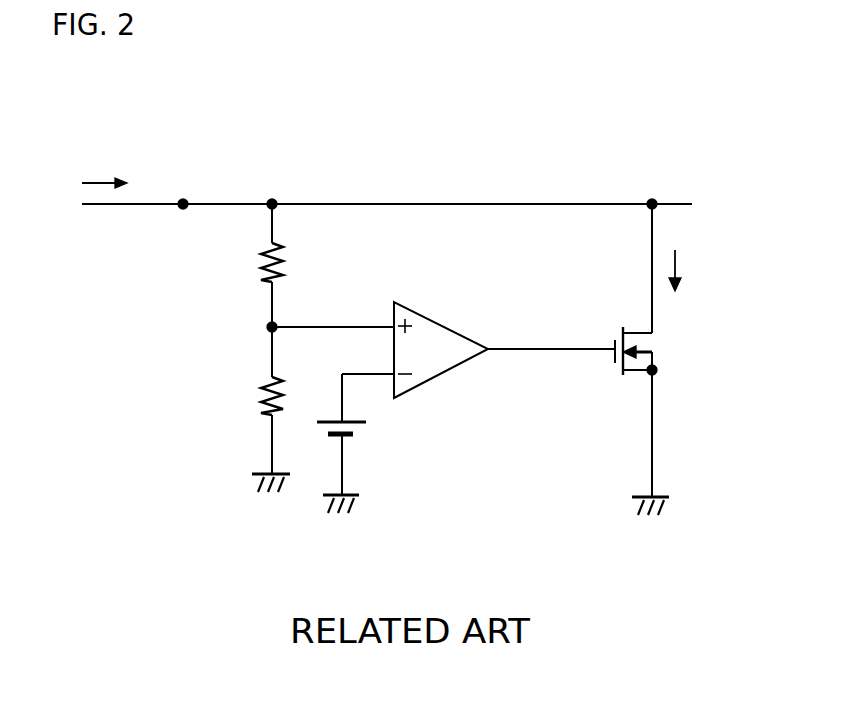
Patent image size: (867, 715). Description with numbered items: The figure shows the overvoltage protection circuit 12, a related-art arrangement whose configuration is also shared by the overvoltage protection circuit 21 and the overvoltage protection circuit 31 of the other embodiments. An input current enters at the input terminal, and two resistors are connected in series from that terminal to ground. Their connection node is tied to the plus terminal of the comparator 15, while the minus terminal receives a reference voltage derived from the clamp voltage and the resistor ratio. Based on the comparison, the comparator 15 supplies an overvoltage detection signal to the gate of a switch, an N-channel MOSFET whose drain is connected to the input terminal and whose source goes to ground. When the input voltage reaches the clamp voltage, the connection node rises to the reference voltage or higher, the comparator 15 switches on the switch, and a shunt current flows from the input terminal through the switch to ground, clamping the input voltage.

The overvoltage protection circuit 12 is at (404, 291).
The overvoltage protection circuit 21 is at (404, 291).
The overvoltage protection circuit 31 is at (510, 91).
The comparator 15 is at (441, 331).